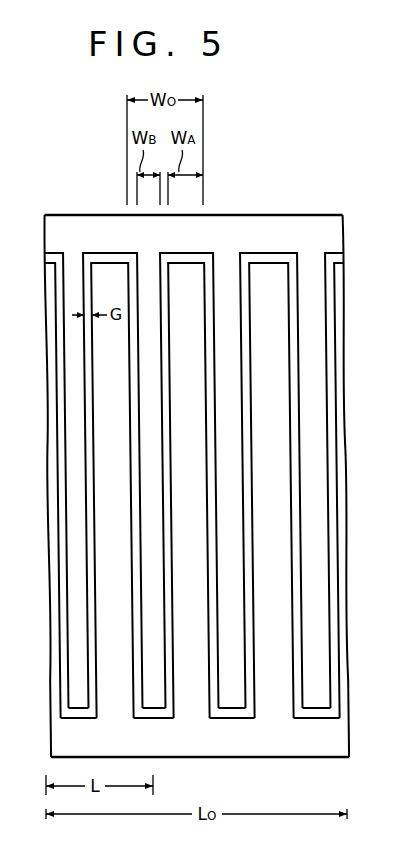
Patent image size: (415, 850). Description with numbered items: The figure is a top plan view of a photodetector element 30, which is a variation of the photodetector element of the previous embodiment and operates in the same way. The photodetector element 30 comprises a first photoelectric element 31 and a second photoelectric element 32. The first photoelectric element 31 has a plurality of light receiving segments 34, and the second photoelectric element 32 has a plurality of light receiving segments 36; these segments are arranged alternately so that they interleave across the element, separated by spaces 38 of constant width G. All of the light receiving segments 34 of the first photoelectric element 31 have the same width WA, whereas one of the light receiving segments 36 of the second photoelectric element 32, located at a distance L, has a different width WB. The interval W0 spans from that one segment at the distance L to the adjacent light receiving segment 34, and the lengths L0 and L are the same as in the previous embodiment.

The photodetector element 30 is at (351, 298).
The first photoelectric element 31 is at (285, 745).
The second photoelectric element 32 is at (256, 217).
The light receiving segments 34 is at (100, 476).
The light receiving segments 36 is at (75, 421).
The spaces 38 is at (62, 578).